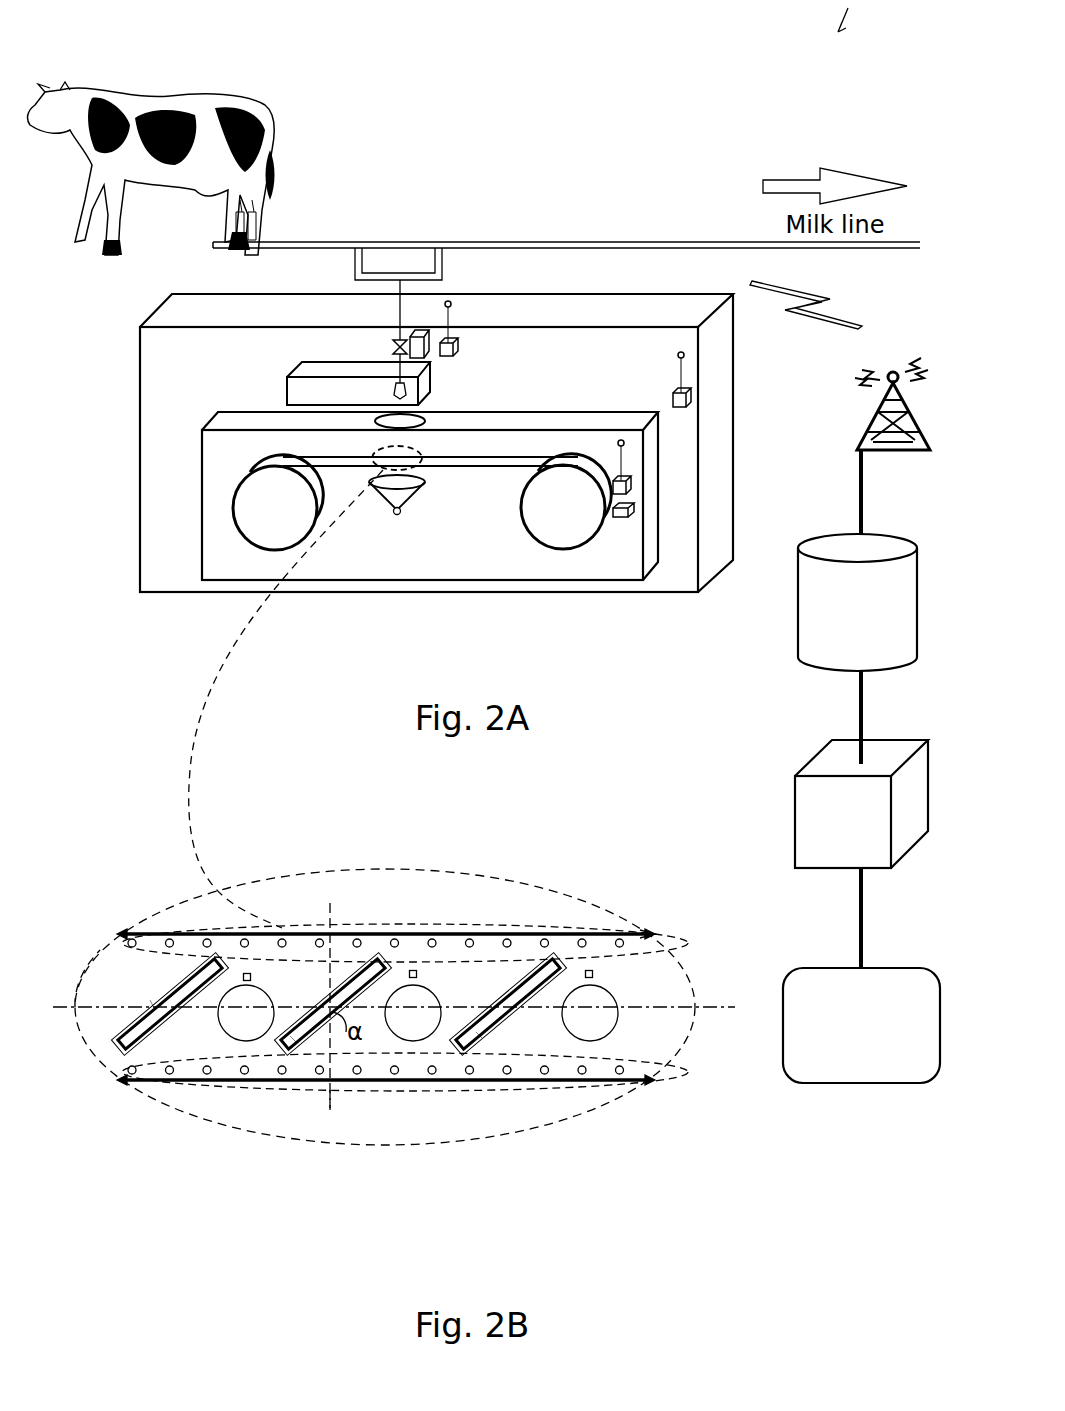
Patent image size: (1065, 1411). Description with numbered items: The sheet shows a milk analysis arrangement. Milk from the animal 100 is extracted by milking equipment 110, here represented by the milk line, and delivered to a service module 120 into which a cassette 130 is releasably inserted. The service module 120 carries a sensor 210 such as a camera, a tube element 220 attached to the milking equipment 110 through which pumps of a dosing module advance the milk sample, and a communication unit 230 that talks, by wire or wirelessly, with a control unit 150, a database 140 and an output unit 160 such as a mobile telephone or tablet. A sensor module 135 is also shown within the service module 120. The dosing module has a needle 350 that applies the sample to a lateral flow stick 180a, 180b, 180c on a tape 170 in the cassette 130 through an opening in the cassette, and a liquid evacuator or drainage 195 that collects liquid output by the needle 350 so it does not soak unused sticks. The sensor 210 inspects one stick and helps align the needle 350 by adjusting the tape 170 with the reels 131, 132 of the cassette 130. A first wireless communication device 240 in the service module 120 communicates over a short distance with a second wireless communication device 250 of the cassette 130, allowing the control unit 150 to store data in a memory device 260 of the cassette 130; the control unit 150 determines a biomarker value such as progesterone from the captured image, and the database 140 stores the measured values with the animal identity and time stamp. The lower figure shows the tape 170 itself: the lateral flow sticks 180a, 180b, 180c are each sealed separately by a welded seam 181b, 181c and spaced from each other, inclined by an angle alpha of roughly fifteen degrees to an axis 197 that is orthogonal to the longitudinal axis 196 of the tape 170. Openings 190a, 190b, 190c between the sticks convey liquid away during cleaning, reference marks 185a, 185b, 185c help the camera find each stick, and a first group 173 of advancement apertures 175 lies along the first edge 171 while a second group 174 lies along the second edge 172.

In FIG. 2A, the animal 100 is at (245, 112).
In FIG. 2A, the milking equipment 110 is at (598, 243).
In FIG. 2A, the service module 120 is at (172, 396).
In FIG. 2A, the cassette 130 is at (220, 483).
In FIG. 2A, the reel 131 is at (270, 512).
In FIG. 2A, the reel 132 is at (558, 510).
In FIG. 2A, the sensor module 135 is at (300, 392).
In FIG. 2A, the database 140 is at (857, 602).
In FIG. 2A, the control unit 150 is at (861, 804).
In FIG. 2A, the output unit 160 is at (783, 1062).
In FIG. 2A, the liquid evacuator or drainage 195 is at (407, 500).
In FIG. 2A, the sensor 210 is at (418, 330).
In FIG. 2A, the tube element 220 is at (396, 338).
In FIG. 2A, the communication unit 230 is at (457, 347).
In FIG. 2A, the first wireless communication device 240 is at (687, 390).
In FIG. 2A, the second wireless communication device 250 is at (628, 485).
In FIG. 2A, the memory device 260 is at (630, 510).
In FIG. 2A, the needle 350 is at (398, 382).
In FIG. 2B, the tape 170 is at (480, 985).
In FIG. 2B, the first edge 171 is at (568, 930).
In FIG. 2B, the second edge 172 is at (597, 1083).
In FIG. 2B, the first group of advancement apertures 173 is at (650, 933).
In FIG. 2B, the second group of advancement apertures 174 is at (672, 1082).
In FIG. 2B, the advancement apertures 175 is at (316, 932).
In FIG. 2B, the lateral flow stick 180a is at (125, 1047).
In FIG. 2B, the lateral flow stick 180b is at (290, 1046).
In FIG. 2B, the lateral flow stick 180c is at (466, 1050).
In FIG. 2B, the welded seam 181b is at (292, 1040).
In FIG. 2B, the welded seam 181c is at (478, 1035).
In FIG. 2B, the reference mark 185a is at (247, 972).
In FIG. 2B, the reference mark 185b is at (413, 970).
In FIG. 2B, the reference mark 185c is at (596, 974).
In FIG. 2B, the opening 190a is at (235, 1027).
In FIG. 2B, the opening 190b is at (400, 1030).
In FIG. 2B, the opening 190c is at (597, 1030).
In FIG. 2B, the longitudinal axis 196 is at (103, 1008).
In FIG. 2B, the axis 197 is at (328, 1107).